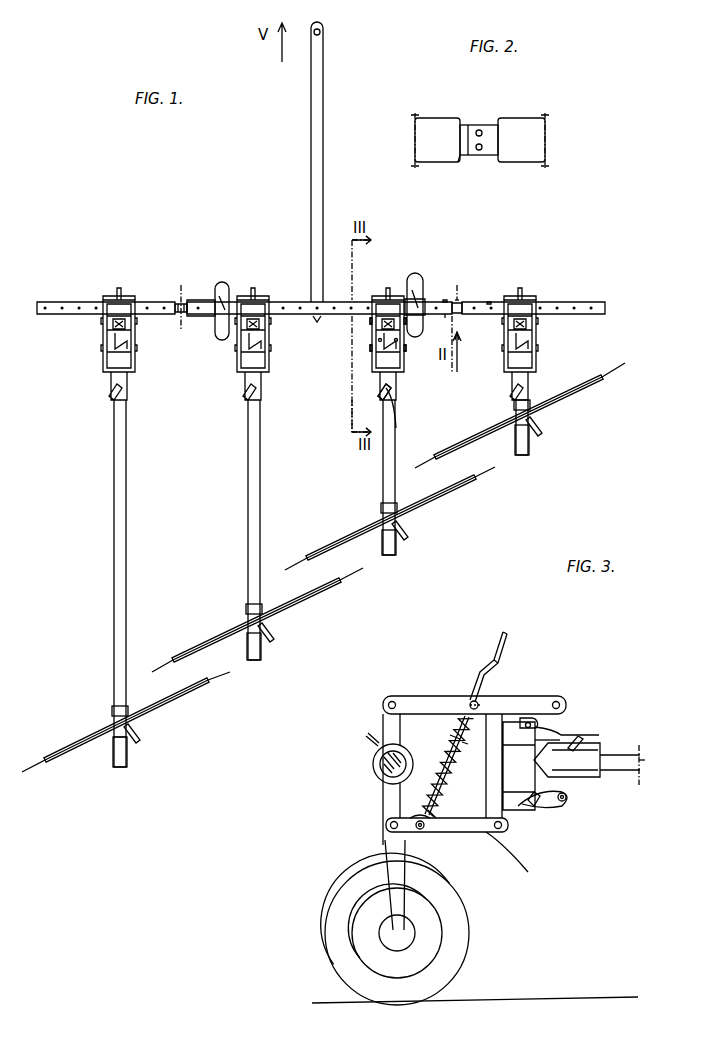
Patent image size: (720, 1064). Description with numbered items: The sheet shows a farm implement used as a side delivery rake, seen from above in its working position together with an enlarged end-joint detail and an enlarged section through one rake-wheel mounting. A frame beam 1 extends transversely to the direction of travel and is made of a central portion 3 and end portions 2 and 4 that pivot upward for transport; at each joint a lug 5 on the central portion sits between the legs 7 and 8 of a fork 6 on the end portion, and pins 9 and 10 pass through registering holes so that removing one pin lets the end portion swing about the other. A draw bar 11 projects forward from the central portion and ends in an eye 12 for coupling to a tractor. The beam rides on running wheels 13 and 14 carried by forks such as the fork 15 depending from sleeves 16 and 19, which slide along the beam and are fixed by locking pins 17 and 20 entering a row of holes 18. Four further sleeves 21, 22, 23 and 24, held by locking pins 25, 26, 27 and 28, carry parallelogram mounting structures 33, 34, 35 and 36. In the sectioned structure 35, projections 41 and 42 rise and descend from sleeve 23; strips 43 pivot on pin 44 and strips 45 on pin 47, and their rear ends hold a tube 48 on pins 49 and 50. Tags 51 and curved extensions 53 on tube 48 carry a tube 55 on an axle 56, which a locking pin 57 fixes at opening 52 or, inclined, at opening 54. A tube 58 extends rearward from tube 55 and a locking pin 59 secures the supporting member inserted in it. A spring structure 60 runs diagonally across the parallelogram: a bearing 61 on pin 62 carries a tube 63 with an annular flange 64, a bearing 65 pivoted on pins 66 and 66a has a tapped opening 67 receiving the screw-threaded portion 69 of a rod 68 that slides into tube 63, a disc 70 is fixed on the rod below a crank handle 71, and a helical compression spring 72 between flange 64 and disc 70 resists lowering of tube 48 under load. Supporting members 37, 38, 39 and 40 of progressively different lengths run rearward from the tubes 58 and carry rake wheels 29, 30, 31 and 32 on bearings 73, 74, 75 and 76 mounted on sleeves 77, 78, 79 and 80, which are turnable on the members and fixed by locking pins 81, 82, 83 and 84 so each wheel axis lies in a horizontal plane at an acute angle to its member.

In FIG. 1, the frame beam 1 is at (452, 290).
In FIG. 1, the end portion 2 is at (40, 314).
In FIG. 1, the central portion 3 is at (319, 318).
In FIG. 2, the central portion 3 is at (442, 124).
In FIG. 3, the central portion 3 is at (372, 780).
In FIG. 1, the end portion 4 is at (605, 312).
In FIG. 2, the end portion 4 is at (524, 126).
In FIG. 1, the lug 5 is at (443, 324).
In FIG. 2, the lug 5 is at (464, 167).
In FIG. 2, the fork 6 is at (492, 127).
In FIG. 1, the leg 7 is at (460, 287).
In FIG. 1, the leg 8 is at (462, 316).
In FIG. 2, the pin 9 is at (478, 130).
In FIG. 2, the pin 10 is at (481, 150).
In FIG. 1, the draw bar 11 is at (311, 158).
In FIG. 1, the eye 12 is at (321, 32).
In FIG. 1, the running wheel 13 is at (222, 282).
In FIG. 1, the running wheel 14 is at (413, 273).
In FIG. 3, the running wheel 14 is at (326, 948).
In FIG. 3, the fork 15 is at (382, 848).
In FIG. 1, the sleeve 16 is at (415, 337).
In FIG. 1, the locking pin 17 is at (445, 300).
In FIG. 1, the holes 18 is at (489, 304).
In FIG. 1, the sleeve 19 is at (205, 316).
In FIG. 1, the locking pin 20 is at (204, 303).
In FIG. 1, the sleeve 21 is at (106, 298).
In FIG. 1, the sleeve 22 is at (245, 294).
In FIG. 1, the sleeve 23 is at (374, 294).
In FIG. 3, the sleeve 23 is at (382, 774).
In FIG. 1, the sleeve 24 is at (536, 298).
In FIG. 1, the locking pin 25 is at (119, 283).
In FIG. 1, the locking pin 26 is at (258, 290).
In FIG. 1, the locking pin 27 is at (390, 290).
In FIG. 3, the locking pin 27 is at (354, 734).
In FIG. 1, the locking pin 28 is at (521, 282).
In FIG. 1, the rake wheel 29 is at (42, 768).
In FIG. 1, the rake wheel 30 is at (336, 584).
In FIG. 1, the rake wheel 31 is at (460, 484).
In FIG. 1, the rake wheel 32 is at (600, 380).
In FIG. 1, the parallelogram mounting structure 33 is at (103, 333).
In FIG. 1, the parallelogram mounting structure 34 is at (269, 334).
In FIG. 1, the parallelogram mounting structure 35 is at (386, 332).
In FIG. 3, the parallelogram mounting structure 35 is at (515, 862).
In FIG. 1, the parallelogram mounting structure 36 is at (536, 332).
In FIG. 1, the supporting member 37 is at (114, 540).
In FIG. 1, the supporting member 38 is at (248, 510).
In FIG. 1, the supporting member 39 is at (382, 475).
In FIG. 3, the supporting member 39 is at (645, 756).
In FIG. 1, the supporting member 40 is at (532, 447).
In FIG. 3, the tab-like projection 41 is at (382, 712).
In FIG. 3, the tab-like projection 42 is at (384, 803).
In FIG. 1, the strips 43 is at (416, 366).
In FIG. 3, the strips 43 is at (410, 696).
In FIG. 3, the pivot pin 44 is at (390, 700).
In FIG. 3, the strips 45 is at (475, 832).
In FIG. 3, the pivot pin 47 is at (390, 826).
In FIG. 3, the tube 48 is at (500, 744).
In FIG. 3, the pivot pin 49 is at (508, 705).
In FIG. 3, the pivot pin 50 is at (505, 828).
In FIG. 1, the tags 51 is at (408, 388).
In FIG. 3, the tags 51 is at (585, 730).
In FIG. 3, the opening 52 is at (524, 809).
In FIG. 3, the strip-like extensions 53 is at (556, 805).
In FIG. 3, the opening 54 is at (568, 797).
In FIG. 3, the tube 55 is at (594, 734).
In FIG. 3, the axle 56 is at (574, 719).
In FIG. 3, the locking pin 57 is at (556, 806).
In FIG. 1, the tube 58 is at (403, 416).
In FIG. 3, the tube 58 is at (590, 777).
In FIG. 1, the locking pin 59 is at (353, 412).
In FIG. 3, the locking pin 59 is at (603, 750).
In FIG. 3, the spring structure 60 is at (434, 733).
In FIG. 3, the bearing 61 is at (416, 832).
In FIG. 3, the pin 62 is at (440, 832).
In FIG. 3, the tube 63 is at (444, 800).
In FIG. 3, the annular flange 64 is at (418, 788).
In FIG. 3, the bearing 65 is at (500, 700).
In FIG. 1, the pin 66 is at (378, 342).
In FIG. 3, the pin 66 is at (465, 692).
In FIG. 1, the pin 66a is at (398, 342).
In FIG. 3, the tapped opening 67 is at (468, 664).
In FIG. 3, the rod 68 is at (473, 744).
In FIG. 3, the screw-threaded portion 69 is at (484, 646).
In FIG. 3, the disc 70 is at (455, 705).
In FIG. 3, the crank handle 71 is at (524, 610).
In FIG. 3, the helical compression spring 72 is at (450, 765).
In FIG. 1, the bearing 73 is at (130, 722).
In FIG. 1, the bearing 74 is at (264, 625).
In FIG. 1, the bearing 75 is at (400, 518).
In FIG. 1, the bearing 76 is at (532, 417).
In FIG. 1, the sleeve 77 is at (112, 710).
In FIG. 1, the sleeve 78 is at (248, 610).
In FIG. 1, the sleeve 79 is at (382, 508).
In FIG. 1, the sleeve 80 is at (532, 398).
In FIG. 1, the locking pin 81 is at (138, 743).
In FIG. 1, the locking pin 82 is at (266, 648).
In FIG. 1, the locking pin 83 is at (400, 542).
In FIG. 1, the locking pin 84 is at (548, 442).